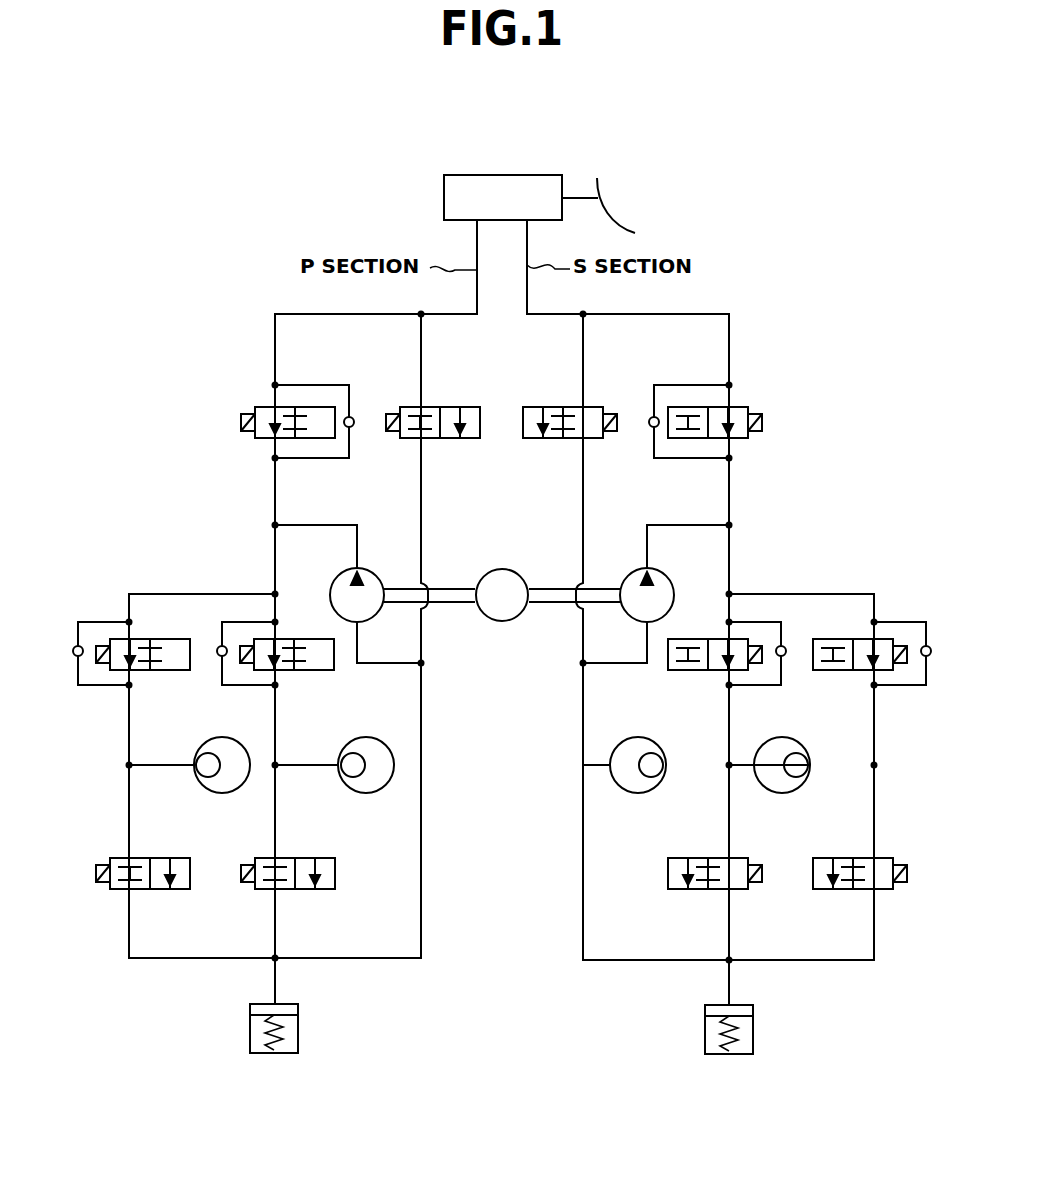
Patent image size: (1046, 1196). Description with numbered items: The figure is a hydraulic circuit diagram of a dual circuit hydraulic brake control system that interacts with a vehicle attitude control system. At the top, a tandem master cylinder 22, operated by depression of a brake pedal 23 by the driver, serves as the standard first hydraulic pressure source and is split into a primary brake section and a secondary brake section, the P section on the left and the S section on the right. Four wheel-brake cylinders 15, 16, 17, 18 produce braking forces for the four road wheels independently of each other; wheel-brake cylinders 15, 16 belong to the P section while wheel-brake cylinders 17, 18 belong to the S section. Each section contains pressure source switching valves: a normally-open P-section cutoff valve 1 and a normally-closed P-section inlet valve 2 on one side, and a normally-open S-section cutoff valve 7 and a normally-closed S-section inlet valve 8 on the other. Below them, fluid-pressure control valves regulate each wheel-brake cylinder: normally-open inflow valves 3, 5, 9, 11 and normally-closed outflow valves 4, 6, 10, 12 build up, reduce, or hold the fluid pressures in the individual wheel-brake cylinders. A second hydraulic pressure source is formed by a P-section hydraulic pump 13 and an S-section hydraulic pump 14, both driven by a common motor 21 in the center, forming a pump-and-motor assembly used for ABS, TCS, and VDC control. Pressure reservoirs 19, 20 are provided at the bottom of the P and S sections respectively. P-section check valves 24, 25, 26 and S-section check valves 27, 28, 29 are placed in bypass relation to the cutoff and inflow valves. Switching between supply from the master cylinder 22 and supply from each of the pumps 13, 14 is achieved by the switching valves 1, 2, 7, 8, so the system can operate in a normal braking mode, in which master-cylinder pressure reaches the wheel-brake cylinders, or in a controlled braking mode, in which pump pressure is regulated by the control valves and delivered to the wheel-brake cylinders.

The P-section cutoff valve 1 is at (262, 405).
The P-section inlet valve 2 is at (405, 405).
The inflow valve 3 is at (145, 637).
The outflow valve 4 is at (118, 889).
The inflow valve 5 is at (297, 637).
The outflow valve 6 is at (262, 889).
The S-section cutoff valve 7 is at (743, 405).
The S-section inlet valve 8 is at (588, 405).
The inflow valve 9 is at (707, 637).
The outflow valve 10 is at (680, 890).
The inflow valve 11 is at (858, 637).
The outflow valve 12 is at (825, 890).
The P-section hydraulic pump 13 is at (371, 574).
The S-section hydraulic pump 14 is at (633, 574).
The wheel-brake cylinder 15 is at (205, 790).
The wheel-brake cylinder 16 is at (348, 790).
The wheel-brake cylinder 17 is at (656, 790).
The wheel-brake cylinder 18 is at (800, 790).
The pressure reservoir 19 is at (298, 1025).
The pressure reservoir 20 is at (705, 1032).
The common motor 21 is at (502, 568).
The tandem master cylinder 22 is at (500, 175).
The brake pedal 23 is at (637, 232).
The P-section check valve 24 is at (351, 430).
The P-section check valve 25 is at (78, 658).
The P-section check valve 26 is at (222, 658).
The S-section check valve 27 is at (652, 430).
The S-section check valve 28 is at (781, 658).
The S-section check valve 29 is at (926, 658).